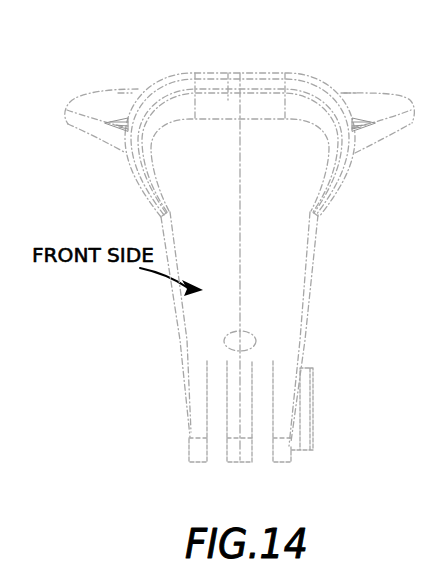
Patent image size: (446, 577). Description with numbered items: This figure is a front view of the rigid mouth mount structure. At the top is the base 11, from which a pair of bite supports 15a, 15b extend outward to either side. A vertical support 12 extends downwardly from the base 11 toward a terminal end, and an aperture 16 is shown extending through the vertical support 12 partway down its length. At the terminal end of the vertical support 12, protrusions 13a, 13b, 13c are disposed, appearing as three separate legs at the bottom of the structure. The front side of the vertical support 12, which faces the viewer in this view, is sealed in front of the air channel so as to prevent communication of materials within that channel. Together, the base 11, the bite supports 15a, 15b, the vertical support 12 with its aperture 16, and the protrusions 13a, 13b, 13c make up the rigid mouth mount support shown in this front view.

The base 11 is at (252, 98).
The vertical support 12 is at (302, 277).
The protrusion 13a is at (200, 455).
The protrusion 13b is at (238, 453).
The protrusion 13c is at (283, 460).
The bite support 15a is at (367, 100).
The bite support 15b is at (105, 98).
The aperture 16 is at (225, 345).